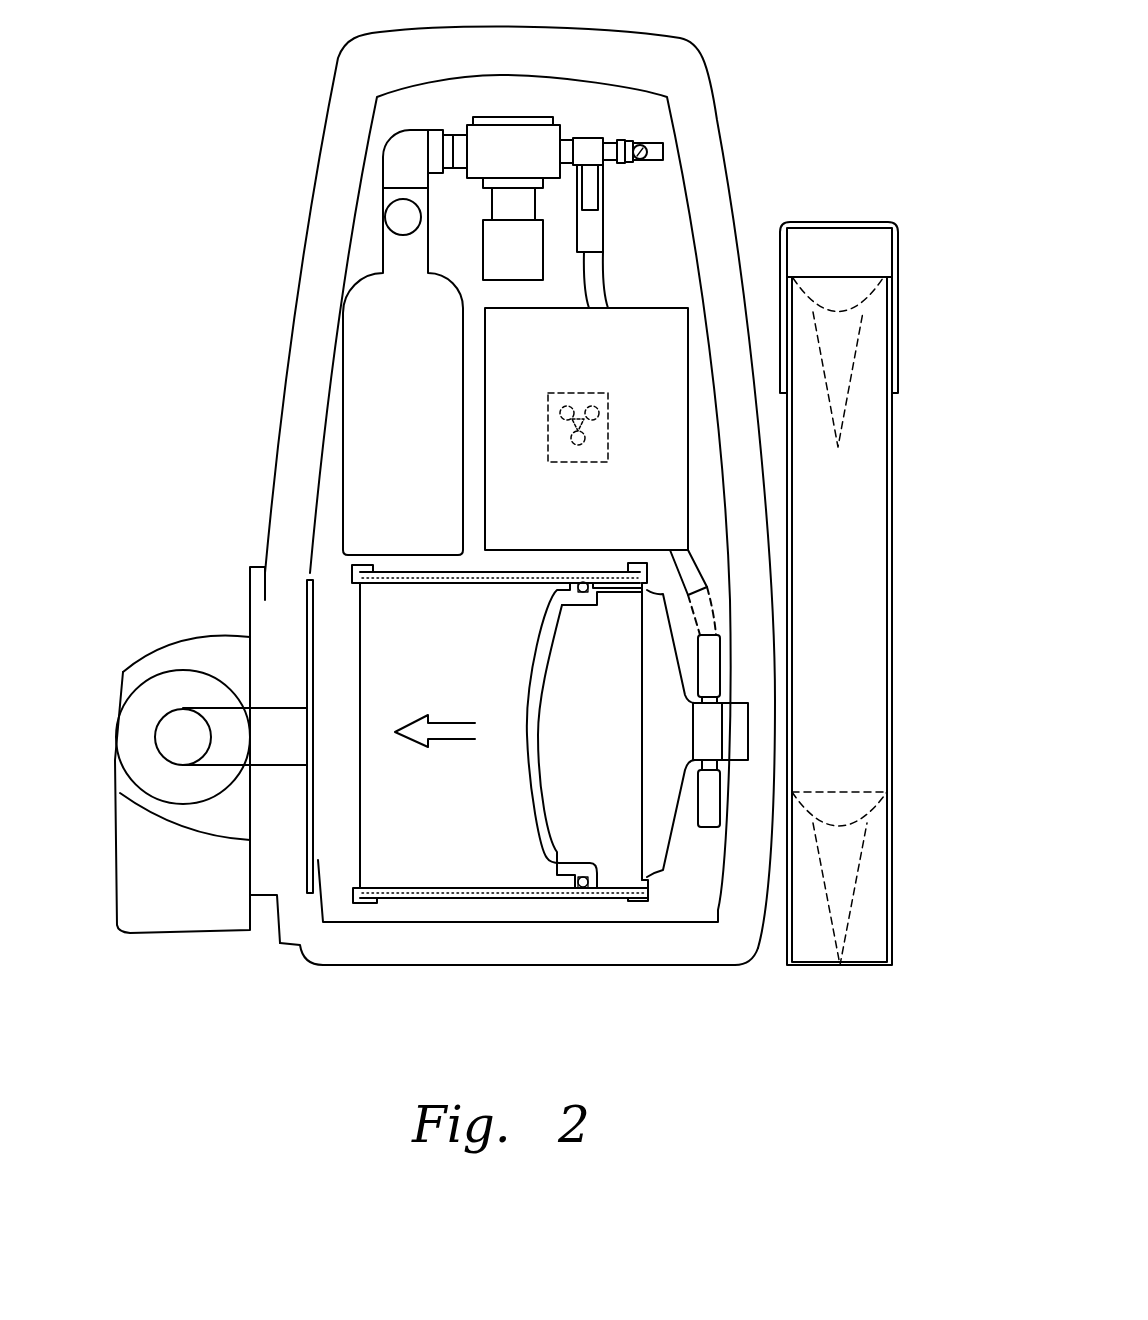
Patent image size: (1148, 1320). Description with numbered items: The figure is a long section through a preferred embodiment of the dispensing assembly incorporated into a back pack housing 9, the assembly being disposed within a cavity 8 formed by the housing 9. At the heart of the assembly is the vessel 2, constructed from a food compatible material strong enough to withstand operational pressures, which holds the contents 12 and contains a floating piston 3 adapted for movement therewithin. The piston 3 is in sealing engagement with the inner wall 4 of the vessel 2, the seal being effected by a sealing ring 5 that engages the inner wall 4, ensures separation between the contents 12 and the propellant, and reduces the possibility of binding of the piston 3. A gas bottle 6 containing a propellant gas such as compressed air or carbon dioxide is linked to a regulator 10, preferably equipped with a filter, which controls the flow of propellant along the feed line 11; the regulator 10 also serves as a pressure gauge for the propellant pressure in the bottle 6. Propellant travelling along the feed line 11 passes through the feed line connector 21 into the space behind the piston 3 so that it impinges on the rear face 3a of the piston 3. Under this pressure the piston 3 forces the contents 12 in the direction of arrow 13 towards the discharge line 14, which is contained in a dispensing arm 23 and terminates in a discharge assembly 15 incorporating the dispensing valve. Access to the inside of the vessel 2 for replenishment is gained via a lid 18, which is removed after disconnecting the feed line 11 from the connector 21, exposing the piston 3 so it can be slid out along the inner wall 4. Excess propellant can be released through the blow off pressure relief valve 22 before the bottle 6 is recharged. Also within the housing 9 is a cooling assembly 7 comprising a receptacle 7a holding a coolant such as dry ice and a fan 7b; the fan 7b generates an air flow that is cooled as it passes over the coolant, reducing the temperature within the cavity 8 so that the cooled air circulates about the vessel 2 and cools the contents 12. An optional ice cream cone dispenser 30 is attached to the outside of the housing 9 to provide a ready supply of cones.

The vessel 2 is at (415, 922).
The floating piston 3 is at (591, 740).
The rear face of piston 3a is at (553, 837).
The inner wall of vessel 4 is at (463, 884).
The sealing ring 5 is at (588, 900).
The gas bottle 6 is at (388, 393).
The cooling assembly 7 is at (680, 280).
The receptacle 7a is at (622, 307).
The fan 7b is at (585, 393).
The cavity 8 is at (330, 535).
The housing 9 is at (310, 338).
The regulator 10 is at (520, 115).
The feed line 11 is at (700, 622).
The contents 12 is at (412, 652).
The arrow 13 is at (418, 735).
The discharge line 14 is at (172, 752).
The discharge assembly 15 is at (147, 660).
The lid 18 is at (657, 742).
The feed line connector 21 is at (708, 815).
The blow off pressure relief valve 22 is at (640, 150).
The dispensing arm 23 is at (197, 693).
The ice cream cone dispenser 30 is at (865, 772).